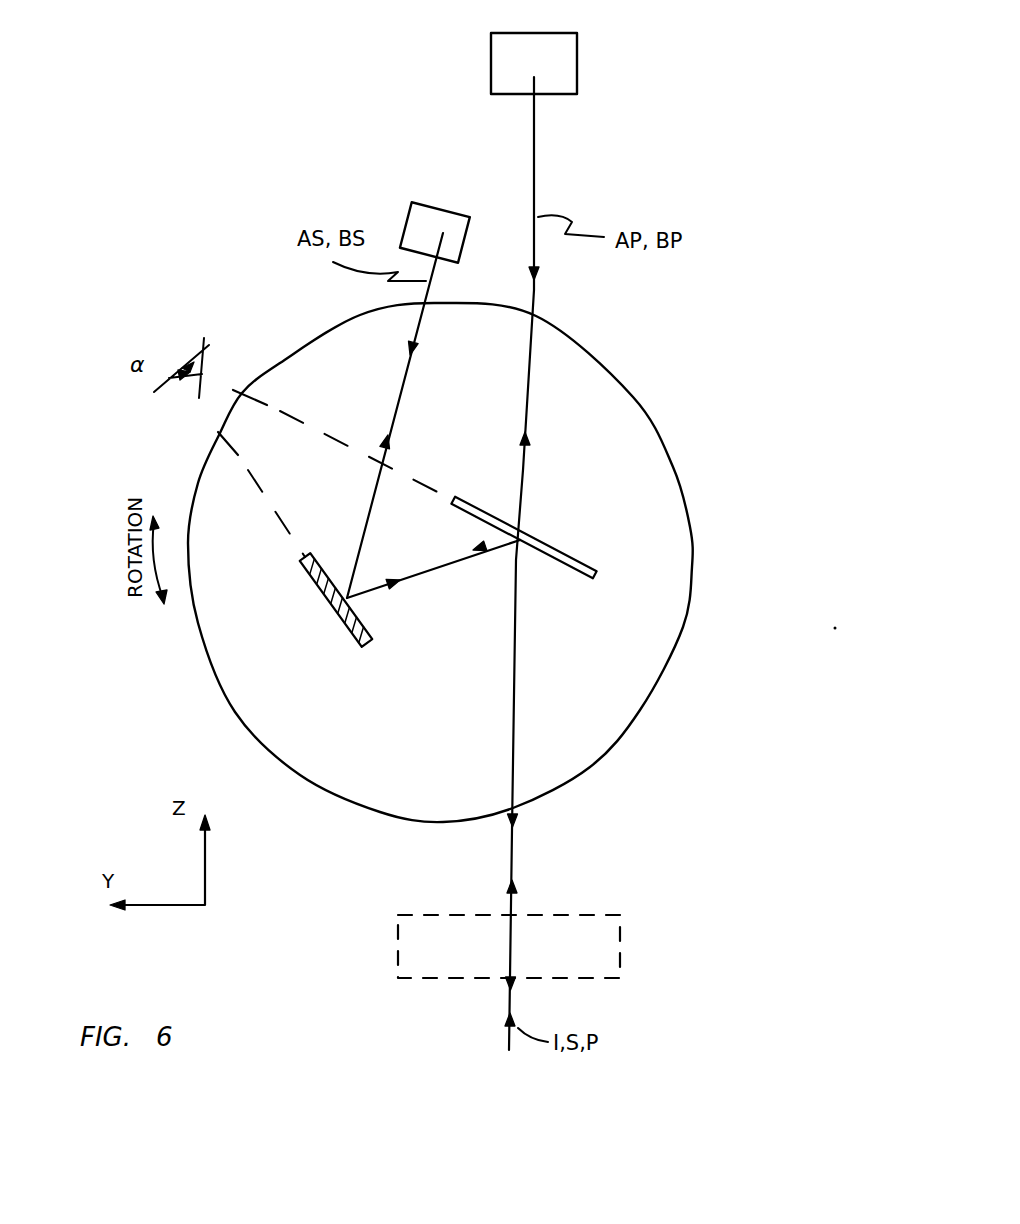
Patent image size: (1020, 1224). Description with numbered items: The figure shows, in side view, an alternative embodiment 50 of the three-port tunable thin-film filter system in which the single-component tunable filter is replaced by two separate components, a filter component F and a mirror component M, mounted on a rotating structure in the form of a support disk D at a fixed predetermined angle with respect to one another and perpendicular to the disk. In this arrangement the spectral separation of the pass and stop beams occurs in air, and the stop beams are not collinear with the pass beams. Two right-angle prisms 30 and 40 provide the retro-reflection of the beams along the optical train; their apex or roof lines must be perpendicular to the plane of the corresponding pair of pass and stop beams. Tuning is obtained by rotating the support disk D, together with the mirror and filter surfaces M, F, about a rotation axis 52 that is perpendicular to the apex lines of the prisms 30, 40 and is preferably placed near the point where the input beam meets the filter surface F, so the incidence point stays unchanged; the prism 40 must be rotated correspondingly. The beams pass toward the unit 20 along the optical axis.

The sample/optical unit receiving beams I,S,P 20 is at (636, 929).
The right-angle prism 30 is at (583, 60).
The right-angle prism 40 is at (412, 208).
The embodiment 50 is at (704, 635).
The rotation axis 52 is at (440, 548).
The support disk D is at (627, 404).
The filter component F is at (597, 555).
The mirror component M is at (300, 585).